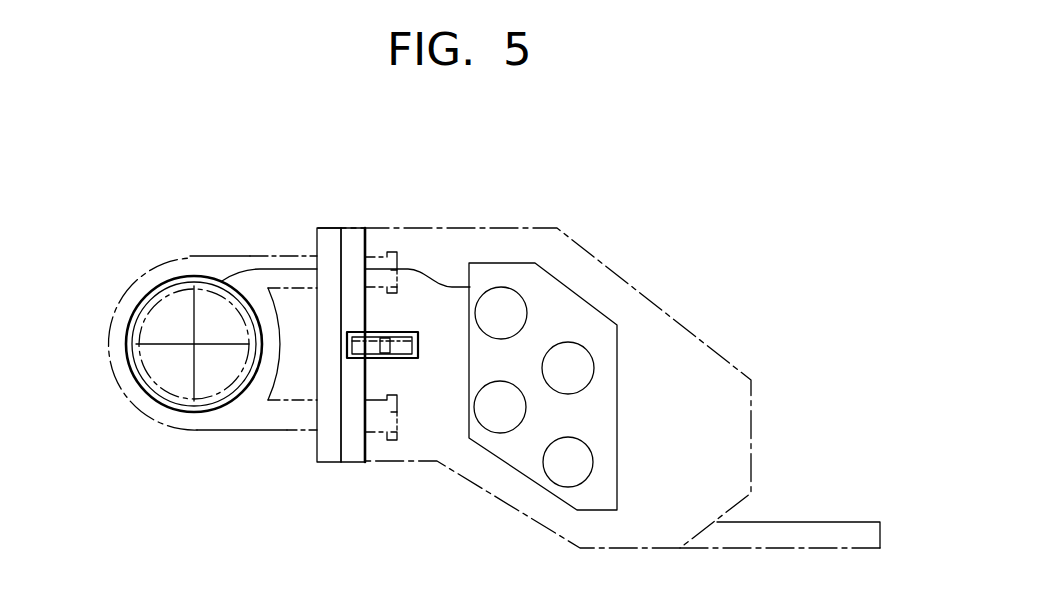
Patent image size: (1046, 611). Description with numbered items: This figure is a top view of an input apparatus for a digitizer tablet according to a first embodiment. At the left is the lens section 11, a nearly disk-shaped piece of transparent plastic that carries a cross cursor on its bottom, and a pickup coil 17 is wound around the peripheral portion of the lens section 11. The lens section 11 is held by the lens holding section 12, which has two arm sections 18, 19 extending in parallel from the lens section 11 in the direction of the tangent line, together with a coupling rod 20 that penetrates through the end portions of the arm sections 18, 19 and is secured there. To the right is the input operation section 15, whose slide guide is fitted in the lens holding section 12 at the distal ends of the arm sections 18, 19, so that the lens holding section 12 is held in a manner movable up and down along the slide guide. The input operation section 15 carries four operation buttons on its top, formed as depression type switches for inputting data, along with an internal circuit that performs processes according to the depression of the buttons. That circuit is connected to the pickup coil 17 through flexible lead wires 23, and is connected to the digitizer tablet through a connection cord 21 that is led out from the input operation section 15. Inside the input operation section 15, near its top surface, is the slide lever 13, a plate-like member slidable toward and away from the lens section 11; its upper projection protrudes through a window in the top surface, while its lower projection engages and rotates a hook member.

The lens section 11 is at (163, 323).
The lens holding section 12 is at (220, 255).
The slide lever 13 is at (420, 340).
The input operation section 15 is at (652, 296).
The pickup coil 17 is at (198, 413).
The arm section 18 is at (293, 255).
The arm section 19 is at (285, 432).
The coupling rod 20 is at (358, 445).
The connection cord 21 is at (822, 520).
The flexible lead wires 23 is at (417, 262).